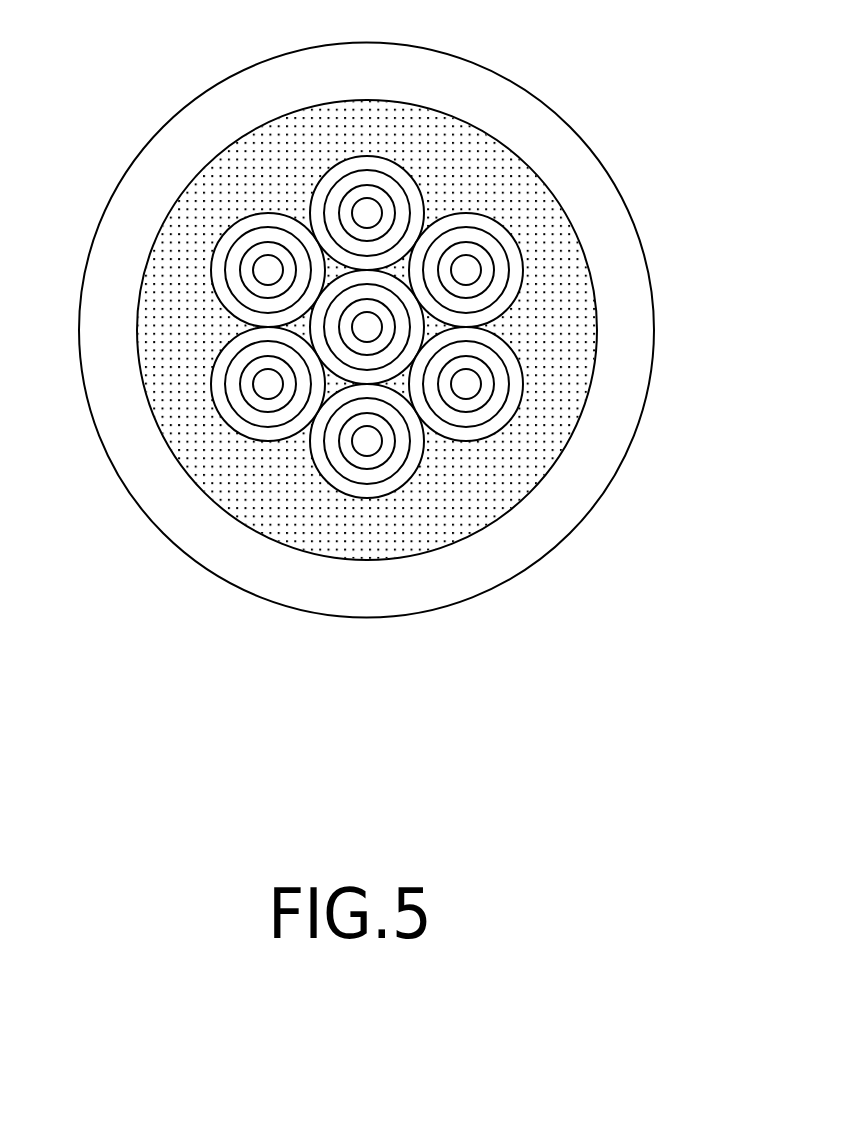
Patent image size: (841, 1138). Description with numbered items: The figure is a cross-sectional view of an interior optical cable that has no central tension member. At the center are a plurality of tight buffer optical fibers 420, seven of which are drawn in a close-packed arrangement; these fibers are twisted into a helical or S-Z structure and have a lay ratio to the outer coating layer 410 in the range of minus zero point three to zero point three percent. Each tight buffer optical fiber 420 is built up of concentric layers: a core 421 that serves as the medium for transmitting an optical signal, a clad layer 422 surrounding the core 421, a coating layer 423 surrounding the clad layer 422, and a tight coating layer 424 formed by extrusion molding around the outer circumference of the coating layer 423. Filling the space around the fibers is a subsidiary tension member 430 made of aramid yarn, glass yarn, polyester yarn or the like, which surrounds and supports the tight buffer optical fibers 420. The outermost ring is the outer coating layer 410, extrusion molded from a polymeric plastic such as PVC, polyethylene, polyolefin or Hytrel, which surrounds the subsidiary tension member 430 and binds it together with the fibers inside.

The outer coating layer 410 is at (160, 485).
The tight buffer optical fiber 420 is at (387, 148).
The core 421 is at (465, 272).
The clad layer 422 is at (483, 277).
The coating layer 423 is at (343, 188).
The tight coating layer 424 is at (320, 203).
The subsidiary tension member 430 is at (455, 488).